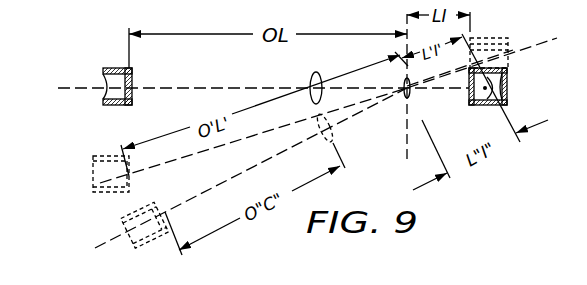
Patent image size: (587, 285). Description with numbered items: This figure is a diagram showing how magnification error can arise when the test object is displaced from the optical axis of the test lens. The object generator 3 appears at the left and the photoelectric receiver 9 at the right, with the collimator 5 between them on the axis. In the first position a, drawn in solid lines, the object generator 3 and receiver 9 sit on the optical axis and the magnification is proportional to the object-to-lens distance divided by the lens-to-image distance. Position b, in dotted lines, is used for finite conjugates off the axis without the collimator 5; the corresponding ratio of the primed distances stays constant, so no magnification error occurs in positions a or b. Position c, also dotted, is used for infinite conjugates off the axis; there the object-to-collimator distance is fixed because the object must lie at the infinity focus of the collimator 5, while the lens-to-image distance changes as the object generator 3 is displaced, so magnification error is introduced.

The object generator 3 is at (98, 70).
The collimator 5 is at (308, 79).
The photoelectric receiver 9 is at (511, 70).
The first position a is at (105, 90).
The position b is at (93, 172).
The position c is at (120, 226).